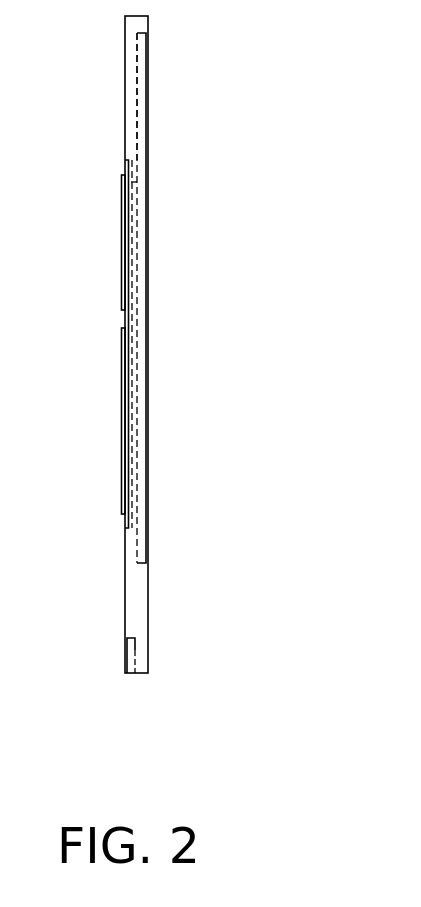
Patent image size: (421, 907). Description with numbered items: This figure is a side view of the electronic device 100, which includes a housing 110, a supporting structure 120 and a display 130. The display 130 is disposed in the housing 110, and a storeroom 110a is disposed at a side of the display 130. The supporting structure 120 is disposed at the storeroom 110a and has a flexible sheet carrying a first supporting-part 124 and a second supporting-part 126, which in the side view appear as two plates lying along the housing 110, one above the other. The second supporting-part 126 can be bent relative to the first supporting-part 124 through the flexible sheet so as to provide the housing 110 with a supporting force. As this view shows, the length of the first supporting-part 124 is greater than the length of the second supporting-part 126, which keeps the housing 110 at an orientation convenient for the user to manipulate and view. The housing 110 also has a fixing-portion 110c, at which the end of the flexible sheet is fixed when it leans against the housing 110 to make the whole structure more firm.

The electronic device 100 is at (297, 703).
The housing 110 is at (140, 602).
The storeroom 110a is at (137, 182).
The fixing-portion 110c is at (135, 648).
The supporting structure 120 is at (84, 344).
The first supporting-part 124 is at (121, 437).
The second supporting-part 126 is at (121, 240).
The display 130 is at (137, 82).